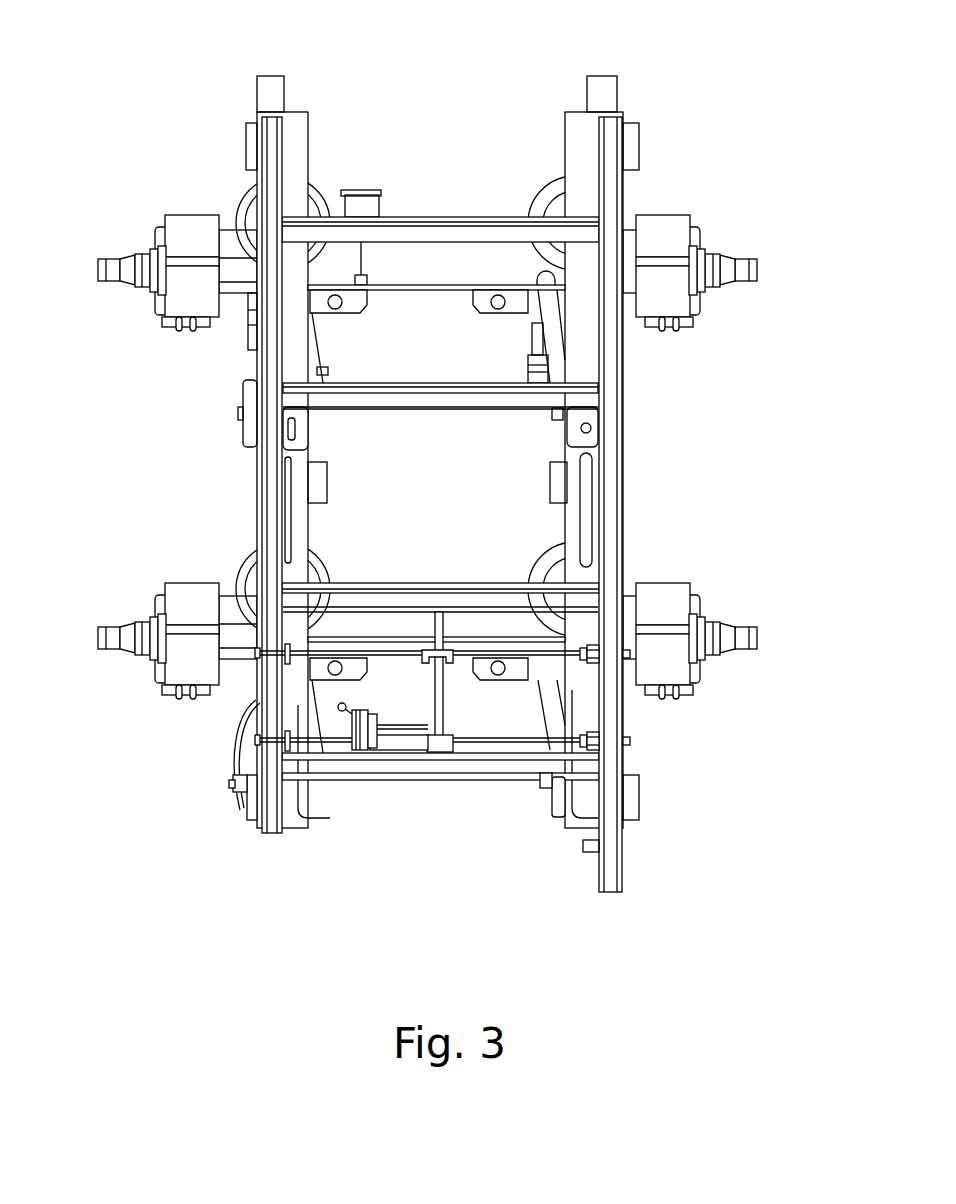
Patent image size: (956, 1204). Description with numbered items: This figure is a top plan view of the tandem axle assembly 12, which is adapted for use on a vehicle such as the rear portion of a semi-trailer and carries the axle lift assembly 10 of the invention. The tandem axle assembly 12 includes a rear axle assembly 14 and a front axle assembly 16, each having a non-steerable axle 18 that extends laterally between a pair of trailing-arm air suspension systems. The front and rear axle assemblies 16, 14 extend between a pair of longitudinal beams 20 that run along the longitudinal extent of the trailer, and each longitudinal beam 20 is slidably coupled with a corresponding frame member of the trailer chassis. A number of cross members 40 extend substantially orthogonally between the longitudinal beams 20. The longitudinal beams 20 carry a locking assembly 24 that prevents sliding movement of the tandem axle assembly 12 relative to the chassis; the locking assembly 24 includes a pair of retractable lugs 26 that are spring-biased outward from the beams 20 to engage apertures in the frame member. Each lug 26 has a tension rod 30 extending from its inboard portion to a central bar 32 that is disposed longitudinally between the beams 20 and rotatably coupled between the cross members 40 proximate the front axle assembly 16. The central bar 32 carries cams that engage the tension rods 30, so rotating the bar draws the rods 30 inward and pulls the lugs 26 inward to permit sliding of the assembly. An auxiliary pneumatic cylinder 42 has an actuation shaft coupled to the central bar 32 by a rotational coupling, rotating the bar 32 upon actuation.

The axle lift assembly 10 is at (203, 758).
The tandem axle assembly 12 is at (207, 90).
The rear axle assembly 14 is at (725, 193).
The front axle assembly 16 is at (717, 570).
The non-steerable axle 18 is at (458, 265).
The longitudinal beam 20 is at (608, 370).
The locking assembly 24 is at (462, 750).
The retractable lug 26 is at (627, 657).
The tension rod 30 is at (537, 738).
The central bar 32 is at (437, 700).
The cross member 40 is at (443, 597).
The auxiliary pneumatic cylinder 42 is at (347, 730).